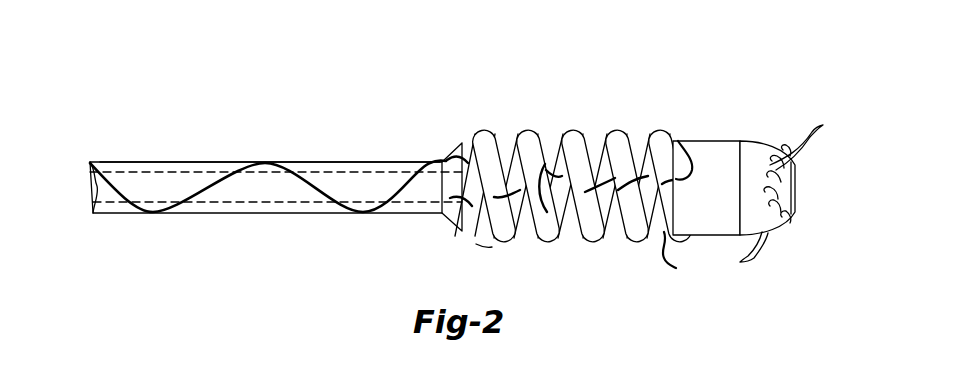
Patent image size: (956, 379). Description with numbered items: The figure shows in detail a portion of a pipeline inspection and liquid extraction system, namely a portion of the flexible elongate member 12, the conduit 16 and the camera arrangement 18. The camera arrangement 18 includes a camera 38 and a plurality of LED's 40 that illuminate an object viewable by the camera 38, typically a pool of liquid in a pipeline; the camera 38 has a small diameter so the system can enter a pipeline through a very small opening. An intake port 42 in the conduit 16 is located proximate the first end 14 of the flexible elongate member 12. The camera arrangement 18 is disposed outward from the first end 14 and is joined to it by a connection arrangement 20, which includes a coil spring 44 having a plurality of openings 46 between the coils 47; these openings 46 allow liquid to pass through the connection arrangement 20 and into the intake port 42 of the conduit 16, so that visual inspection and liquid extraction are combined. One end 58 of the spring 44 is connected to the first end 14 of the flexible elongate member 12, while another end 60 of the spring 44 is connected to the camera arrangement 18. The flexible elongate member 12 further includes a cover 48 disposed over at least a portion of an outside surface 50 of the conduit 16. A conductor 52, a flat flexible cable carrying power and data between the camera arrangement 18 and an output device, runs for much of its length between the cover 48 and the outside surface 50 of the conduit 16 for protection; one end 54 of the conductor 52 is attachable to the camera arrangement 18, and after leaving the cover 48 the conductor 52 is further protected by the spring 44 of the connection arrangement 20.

The flexible elongate member 12 is at (121, 156).
The first end 14 is at (448, 224).
The conduit 16 is at (107, 202).
The camera arrangement 18 is at (759, 179).
The connection arrangement 20 is at (572, 191).
The camera 38 is at (796, 188).
The LED's 40 is at (823, 126).
The intake port 42 is at (475, 243).
The coil spring 44 is at (571, 128).
The openings 46 is at (612, 238).
The coils 47 is at (486, 129).
The cover 48 is at (197, 160).
The outside surface 50 is at (350, 162).
The conductor 52 is at (218, 186).
The end of the conductor 54 is at (680, 141).
The end of the spring 58 is at (462, 150).
The end of the spring 60 is at (664, 250).